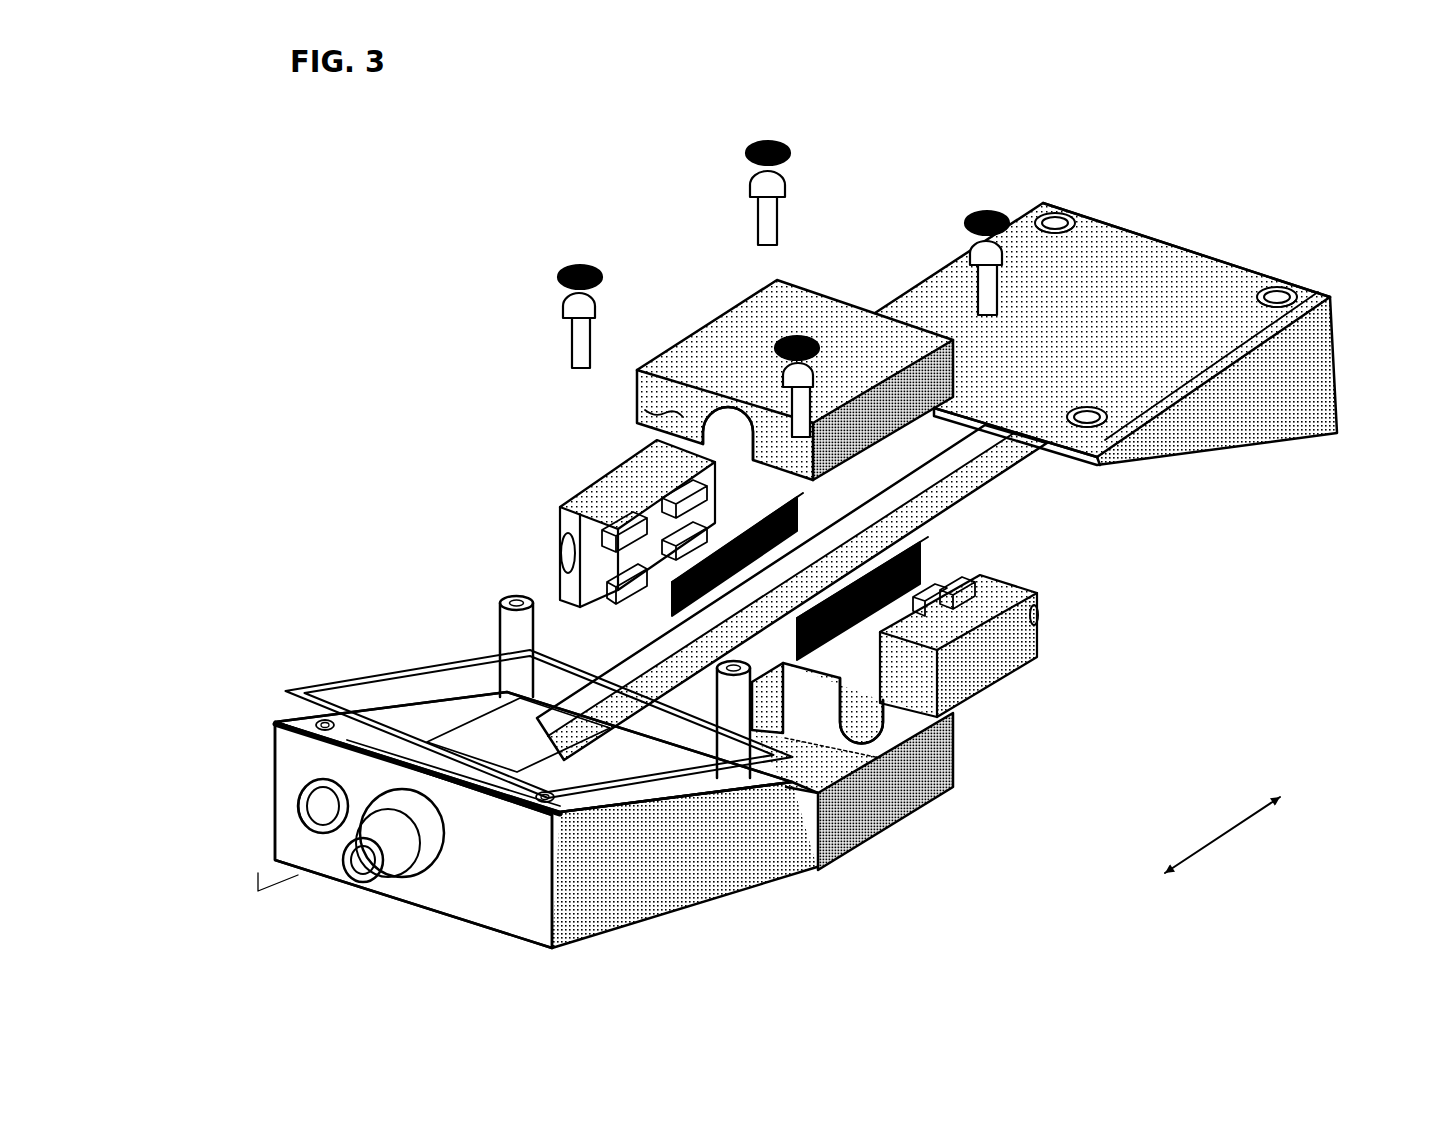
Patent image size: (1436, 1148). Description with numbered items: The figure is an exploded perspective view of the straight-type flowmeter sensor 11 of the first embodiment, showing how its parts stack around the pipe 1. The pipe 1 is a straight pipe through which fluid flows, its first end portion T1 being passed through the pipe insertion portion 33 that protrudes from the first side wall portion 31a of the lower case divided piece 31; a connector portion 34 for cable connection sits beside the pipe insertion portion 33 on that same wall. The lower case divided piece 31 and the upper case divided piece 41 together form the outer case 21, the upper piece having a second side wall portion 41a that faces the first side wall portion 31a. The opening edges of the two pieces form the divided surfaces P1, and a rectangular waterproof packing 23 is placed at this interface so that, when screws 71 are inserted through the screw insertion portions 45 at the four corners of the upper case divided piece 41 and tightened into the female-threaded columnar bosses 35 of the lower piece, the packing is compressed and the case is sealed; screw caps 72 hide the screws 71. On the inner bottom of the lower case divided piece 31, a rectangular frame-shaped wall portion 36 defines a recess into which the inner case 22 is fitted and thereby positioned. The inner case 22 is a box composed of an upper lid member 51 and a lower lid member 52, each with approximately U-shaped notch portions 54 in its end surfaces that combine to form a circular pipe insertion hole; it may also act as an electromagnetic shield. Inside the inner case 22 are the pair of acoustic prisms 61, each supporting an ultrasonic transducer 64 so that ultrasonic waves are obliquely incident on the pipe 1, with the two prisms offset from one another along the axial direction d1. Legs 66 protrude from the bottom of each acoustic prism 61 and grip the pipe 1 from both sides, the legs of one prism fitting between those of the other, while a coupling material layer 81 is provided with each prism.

The straight-type flowmeter sensor 11 is at (366, 299).
The pipe 1 is at (910, 498).
The outer case 21 is at (783, 567).
The inner case 22 is at (810, 517).
The waterproof packing 23 is at (382, 676).
The lower case divided piece 31 is at (648, 890).
The first side wall portion 31a is at (464, 890).
The pipe insertion portion 33 is at (413, 880).
The connector portion 34 is at (298, 790).
The boss 35 is at (513, 600).
The wall portion 36 is at (692, 800).
The upper case divided piece 41 is at (1106, 353).
The second side wall portion 41a is at (1187, 246).
The screw insertion portion 45 is at (1058, 218).
The upper lid member 51 is at (815, 300).
The lower lid member 52 is at (890, 822).
The notch portion 54 is at (642, 410).
The acoustic prism 61 is at (807, 572).
The ultrasonic transducer 64 is at (560, 548).
The leg 66 is at (683, 490).
The screw 71 is at (760, 205).
The screw cap 72 is at (748, 153).
The coupling material layer 81 is at (804, 512).
The divided surface P1 is at (1190, 456).
The first end portion T1 is at (352, 875).
The axial direction d1 is at (1222, 830).